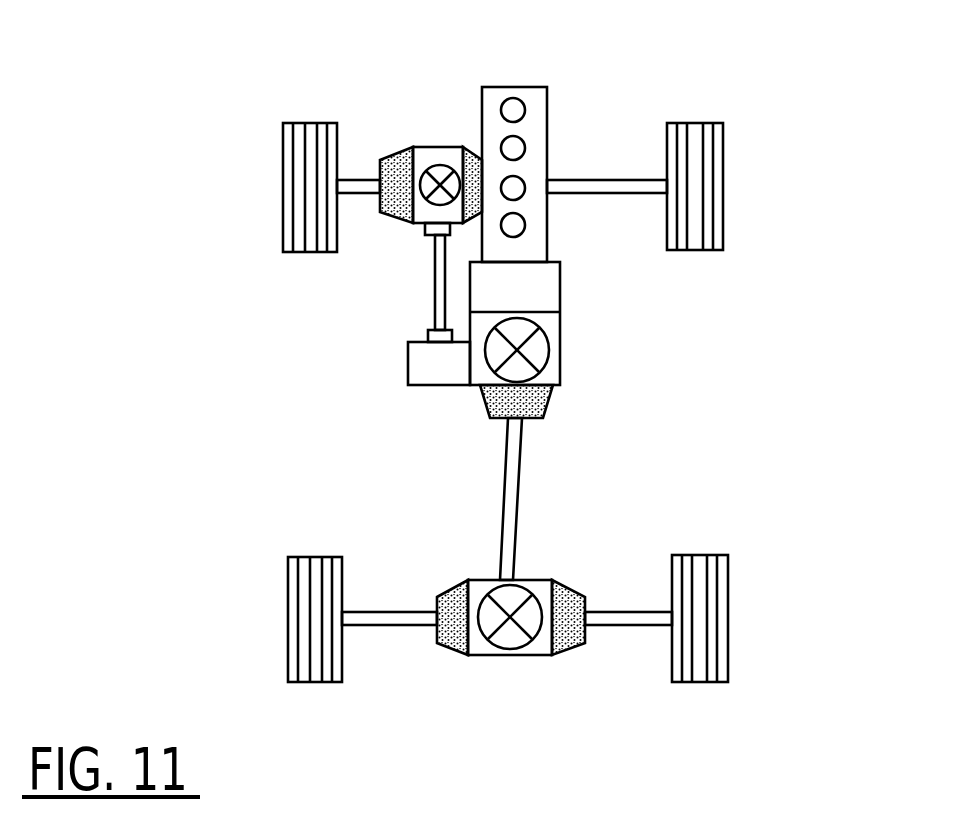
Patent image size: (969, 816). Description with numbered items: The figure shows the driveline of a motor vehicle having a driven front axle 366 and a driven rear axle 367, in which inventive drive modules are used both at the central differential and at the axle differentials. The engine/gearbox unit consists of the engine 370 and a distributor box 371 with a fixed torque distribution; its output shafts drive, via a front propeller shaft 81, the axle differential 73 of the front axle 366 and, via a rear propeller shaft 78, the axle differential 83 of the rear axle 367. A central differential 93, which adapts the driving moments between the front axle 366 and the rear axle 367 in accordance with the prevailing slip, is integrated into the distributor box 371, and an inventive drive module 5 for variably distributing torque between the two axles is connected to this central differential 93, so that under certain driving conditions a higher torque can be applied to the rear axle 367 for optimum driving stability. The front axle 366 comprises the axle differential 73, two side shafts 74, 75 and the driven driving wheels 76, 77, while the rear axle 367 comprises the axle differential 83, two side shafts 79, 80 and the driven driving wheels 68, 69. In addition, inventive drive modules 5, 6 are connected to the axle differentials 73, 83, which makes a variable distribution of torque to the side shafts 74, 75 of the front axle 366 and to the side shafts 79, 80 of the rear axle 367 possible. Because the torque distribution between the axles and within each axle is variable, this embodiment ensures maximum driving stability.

The drive module 5 is at (397, 205).
The drive module 6 is at (475, 173).
The driving wheel 68 is at (315, 555).
The driving wheel 69 is at (703, 562).
The axle differential 73 is at (430, 147).
The side shaft 74 is at (350, 180).
The side shaft 75 is at (607, 180).
The driving wheel 76 is at (305, 122).
The driving wheel 77 is at (697, 125).
The rear propeller shaft 78 is at (510, 493).
The side shaft 79 is at (390, 615).
The side shaft 80 is at (622, 607).
The front propeller shaft 81 is at (434, 297).
The axle differential 83 is at (512, 652).
The central differential 93 is at (545, 362).
The front axle 366 is at (758, 187).
The rear axle 367 is at (780, 622).
The engine 370 is at (517, 86).
The distributor box 371 is at (560, 303).